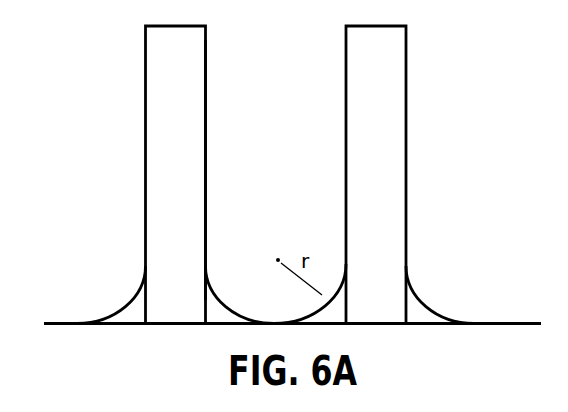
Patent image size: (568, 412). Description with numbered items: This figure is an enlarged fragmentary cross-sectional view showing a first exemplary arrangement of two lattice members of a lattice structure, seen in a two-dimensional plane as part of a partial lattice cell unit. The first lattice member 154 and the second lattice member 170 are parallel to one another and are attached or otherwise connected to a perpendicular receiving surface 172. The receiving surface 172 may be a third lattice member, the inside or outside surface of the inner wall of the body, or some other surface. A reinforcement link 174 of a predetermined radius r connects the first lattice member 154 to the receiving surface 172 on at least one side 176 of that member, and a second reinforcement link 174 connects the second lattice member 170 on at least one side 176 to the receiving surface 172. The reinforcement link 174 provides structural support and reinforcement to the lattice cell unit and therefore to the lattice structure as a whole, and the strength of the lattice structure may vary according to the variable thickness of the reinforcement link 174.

The first lattice member 154 is at (158, 75).
The second lattice member 170 is at (392, 71).
The receiving surface 172 is at (118, 323).
The reinforcement link 174 is at (214, 305).
The side of lattice member 176 is at (208, 153).